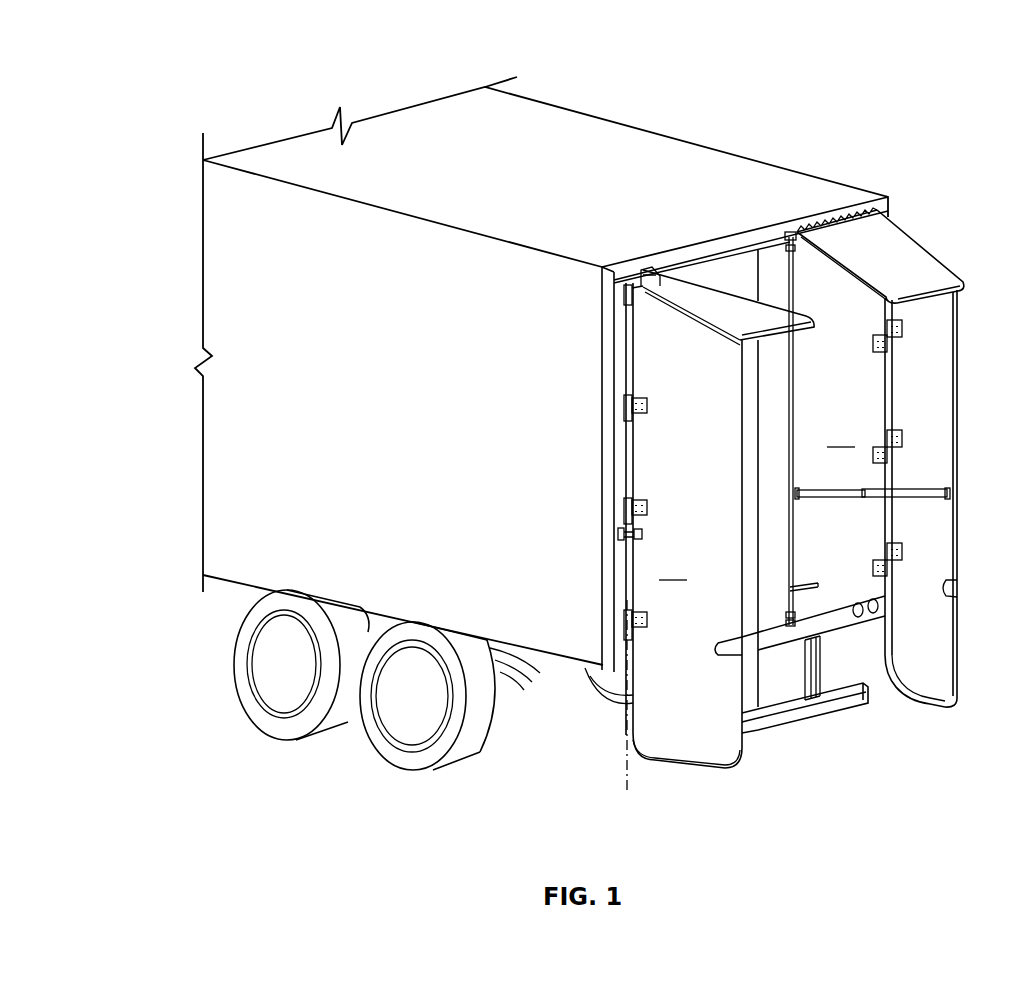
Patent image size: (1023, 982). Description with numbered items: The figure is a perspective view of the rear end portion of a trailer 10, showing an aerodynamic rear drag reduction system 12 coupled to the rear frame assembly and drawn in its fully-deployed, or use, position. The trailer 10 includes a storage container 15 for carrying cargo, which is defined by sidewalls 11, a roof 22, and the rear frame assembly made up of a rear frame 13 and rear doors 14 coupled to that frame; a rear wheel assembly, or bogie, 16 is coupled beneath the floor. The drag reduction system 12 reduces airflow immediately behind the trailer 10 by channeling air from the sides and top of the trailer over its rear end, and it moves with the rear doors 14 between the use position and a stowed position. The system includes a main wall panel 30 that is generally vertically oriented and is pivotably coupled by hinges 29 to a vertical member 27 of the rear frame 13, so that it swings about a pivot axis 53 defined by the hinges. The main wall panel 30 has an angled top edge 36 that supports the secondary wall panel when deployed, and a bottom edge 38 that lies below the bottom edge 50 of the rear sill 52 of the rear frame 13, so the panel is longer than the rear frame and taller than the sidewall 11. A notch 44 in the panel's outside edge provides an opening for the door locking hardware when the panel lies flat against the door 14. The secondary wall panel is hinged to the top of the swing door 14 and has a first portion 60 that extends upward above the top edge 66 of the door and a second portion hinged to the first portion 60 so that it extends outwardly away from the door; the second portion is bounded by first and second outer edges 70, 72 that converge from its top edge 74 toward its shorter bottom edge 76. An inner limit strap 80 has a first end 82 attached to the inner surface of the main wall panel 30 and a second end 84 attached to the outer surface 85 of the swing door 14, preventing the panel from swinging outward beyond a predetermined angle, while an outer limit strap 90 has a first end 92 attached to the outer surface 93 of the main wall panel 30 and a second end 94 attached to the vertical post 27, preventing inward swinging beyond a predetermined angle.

The trailer 10 is at (248, 70).
The sidewalls 11 is at (240, 460).
The aerodynamic rear drag reduction system 12 is at (922, 211).
The rear frame 13 is at (776, 232).
The rear doors 14 is at (862, 373).
The storage container 15 is at (258, 293).
The rear wheel assembly 16 is at (226, 642).
The roof 22 is at (541, 120).
The vertical member 27 is at (622, 337).
The hinges 29 is at (615, 630).
The main wall panel 30 is at (702, 746).
The top edge 36 is at (640, 270).
The bottom edge 38 is at (928, 702).
The notch 44 is at (956, 590).
The bottom edge 50 is at (762, 647).
The rear sill 52 is at (828, 620).
The pivot axis 53 is at (620, 752).
The first portion 60 is at (640, 284).
The top edge 66 is at (742, 262).
The first outer edge 70 is at (692, 318).
The second outer edge 72 is at (785, 300).
The top edge 74 is at (650, 268).
The bottom edge 76 is at (775, 340).
The inner limit strap 80 is at (912, 491).
The first end 82 is at (948, 494).
The second end 84 is at (797, 492).
The outer surface 85 is at (821, 429).
The outer limit strap 90 is at (620, 540).
The first end 92 is at (643, 532).
The outer surface 93 is at (688, 506).
The second end 94 is at (620, 532).